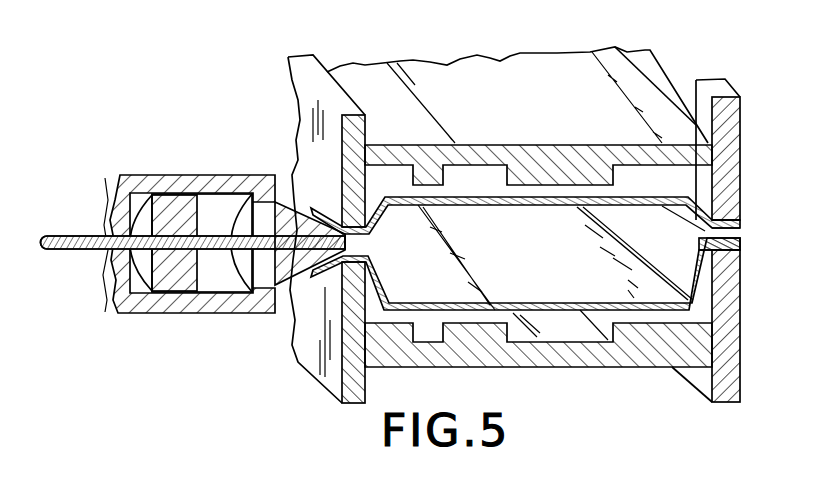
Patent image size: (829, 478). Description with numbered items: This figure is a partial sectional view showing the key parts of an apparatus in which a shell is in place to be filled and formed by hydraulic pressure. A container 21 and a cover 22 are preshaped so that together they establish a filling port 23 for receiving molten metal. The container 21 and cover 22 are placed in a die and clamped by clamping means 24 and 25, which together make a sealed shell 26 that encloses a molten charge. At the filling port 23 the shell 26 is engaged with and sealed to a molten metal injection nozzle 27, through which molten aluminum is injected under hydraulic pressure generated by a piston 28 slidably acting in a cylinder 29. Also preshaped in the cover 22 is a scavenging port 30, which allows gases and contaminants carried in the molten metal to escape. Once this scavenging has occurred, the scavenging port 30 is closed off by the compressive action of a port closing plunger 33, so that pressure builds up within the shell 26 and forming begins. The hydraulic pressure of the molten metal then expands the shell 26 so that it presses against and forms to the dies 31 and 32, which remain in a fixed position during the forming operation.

The container 21 is at (562, 313).
The cover 22 is at (475, 195).
The filling port 23 is at (330, 192).
The clamping means 24 is at (670, 70).
The clamping means 25 is at (732, 343).
The sealed shell 26 is at (527, 302).
The molten metal injection nozzle 27 is at (311, 208).
The piston 28 is at (130, 272).
The cylinder 29 is at (198, 314).
The scavenging port 30 is at (742, 237).
The die 31 is at (588, 162).
The die 32 is at (672, 368).
The port closing plunger 33 is at (740, 168).